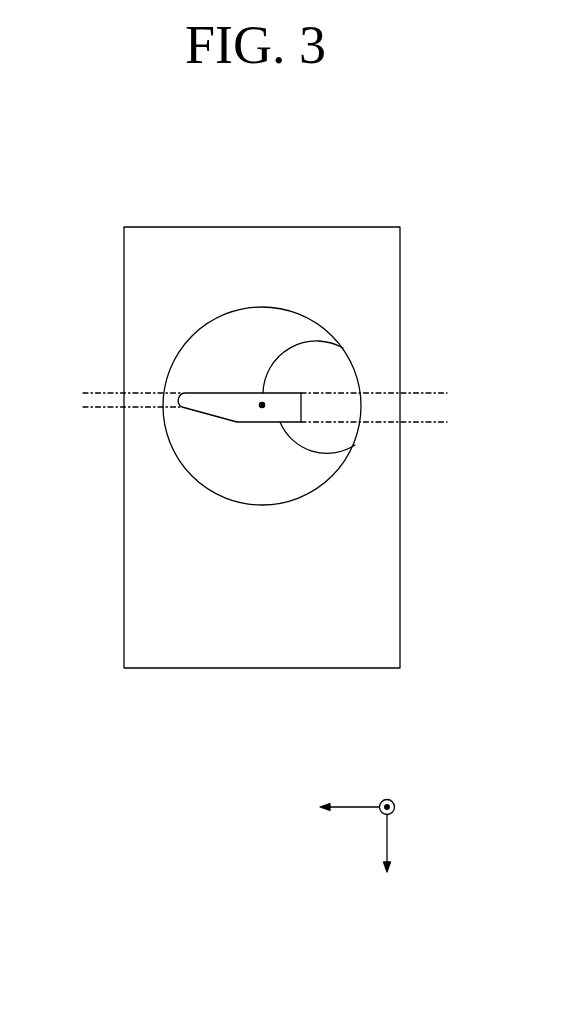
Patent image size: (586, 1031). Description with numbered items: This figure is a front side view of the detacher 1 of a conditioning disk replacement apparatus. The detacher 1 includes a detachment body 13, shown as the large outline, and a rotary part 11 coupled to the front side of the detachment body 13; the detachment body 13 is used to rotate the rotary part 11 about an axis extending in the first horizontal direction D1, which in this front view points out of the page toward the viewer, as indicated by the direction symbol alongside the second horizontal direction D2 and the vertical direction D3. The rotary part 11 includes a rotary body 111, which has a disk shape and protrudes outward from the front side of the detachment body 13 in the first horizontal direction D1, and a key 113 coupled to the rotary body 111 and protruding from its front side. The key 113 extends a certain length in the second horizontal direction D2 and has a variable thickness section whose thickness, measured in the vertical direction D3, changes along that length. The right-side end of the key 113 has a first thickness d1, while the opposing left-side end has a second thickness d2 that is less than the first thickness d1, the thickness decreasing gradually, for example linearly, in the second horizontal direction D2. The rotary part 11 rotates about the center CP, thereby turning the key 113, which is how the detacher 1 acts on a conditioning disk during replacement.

The detacher 1 is at (397, 170).
The detachment body 13 is at (387, 307).
The rotary part 11 is at (321, 406).
The rotary body 111 is at (328, 482).
The key 113 is at (355, 445).
The center axis CP is at (343, 348).
The first thickness d1 is at (438, 393).
The second thickness d2 is at (89, 383).
The first horizontal direction D1 is at (389, 795).
The second horizontal direction D2 is at (335, 808).
The vertical direction D3 is at (387, 859).